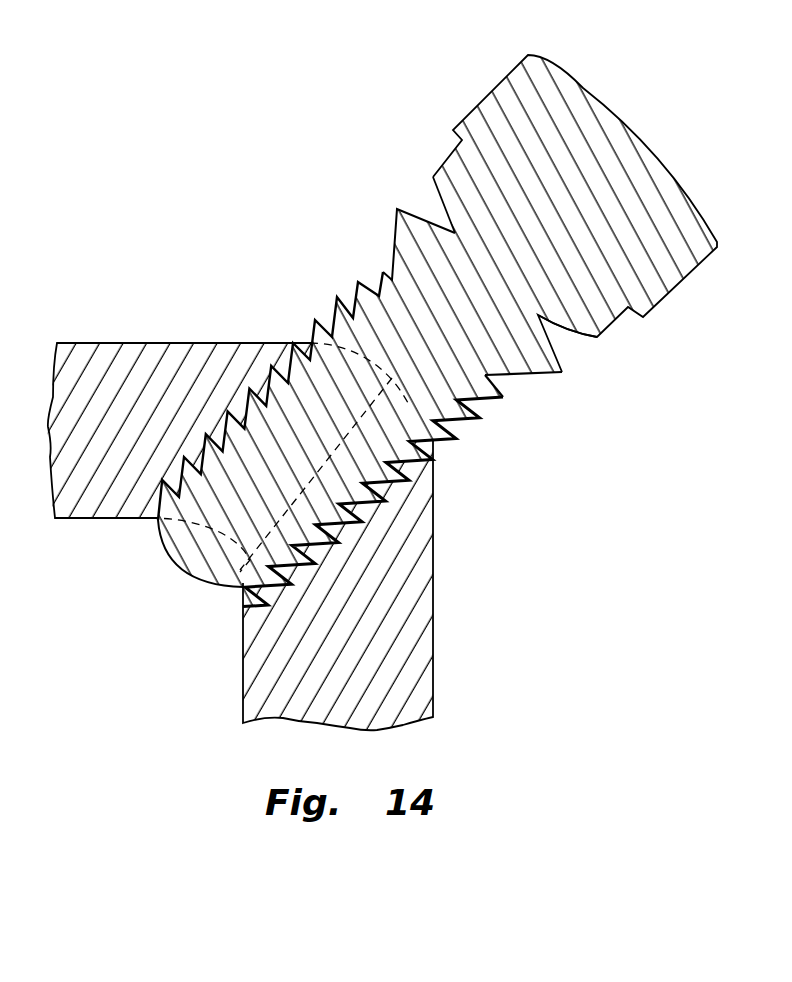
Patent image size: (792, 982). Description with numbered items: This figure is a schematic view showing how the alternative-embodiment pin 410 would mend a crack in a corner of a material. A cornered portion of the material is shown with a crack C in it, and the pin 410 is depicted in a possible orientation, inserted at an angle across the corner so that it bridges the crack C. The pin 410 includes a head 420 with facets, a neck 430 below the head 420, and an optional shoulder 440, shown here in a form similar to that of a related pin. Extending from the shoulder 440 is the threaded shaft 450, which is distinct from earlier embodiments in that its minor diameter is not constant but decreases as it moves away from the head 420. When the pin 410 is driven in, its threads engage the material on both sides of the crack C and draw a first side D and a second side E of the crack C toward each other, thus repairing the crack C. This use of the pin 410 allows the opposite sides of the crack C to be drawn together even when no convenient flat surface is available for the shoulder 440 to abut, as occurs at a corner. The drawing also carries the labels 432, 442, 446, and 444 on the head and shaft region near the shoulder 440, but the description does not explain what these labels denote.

The pin 410 is at (232, 177).
The head 420 is at (483, 100).
The neck 430 is at (418, 190).
The shoulder 440 is at (393, 220).
The threaded shaft 450 is at (308, 295).
The undercut notch 432 is at (562, 330).
The flat land 442 is at (565, 374).
The transition flank 446 is at (490, 377).
The lower thread flank 444 is at (500, 388).
The first side D is at (149, 449).
The second side E is at (367, 637).
The crack C is at (240, 583).